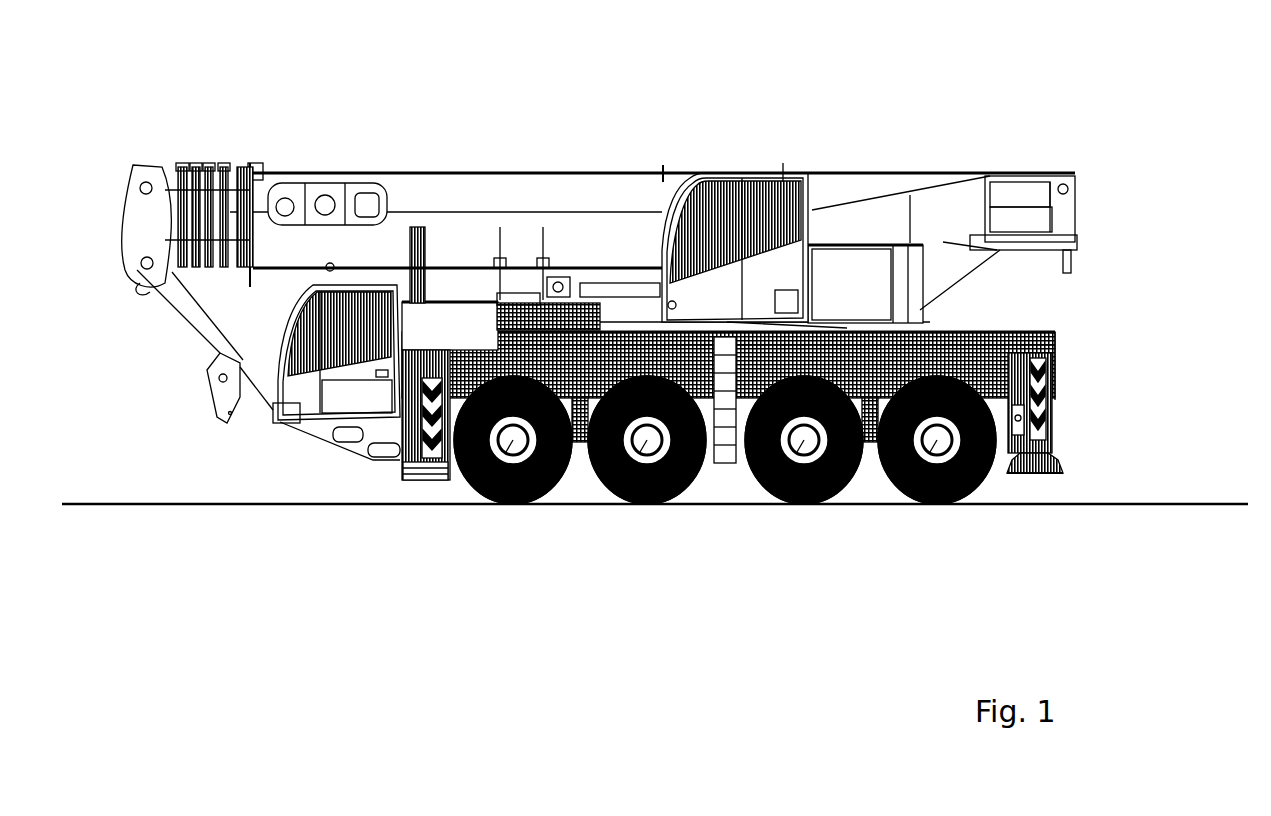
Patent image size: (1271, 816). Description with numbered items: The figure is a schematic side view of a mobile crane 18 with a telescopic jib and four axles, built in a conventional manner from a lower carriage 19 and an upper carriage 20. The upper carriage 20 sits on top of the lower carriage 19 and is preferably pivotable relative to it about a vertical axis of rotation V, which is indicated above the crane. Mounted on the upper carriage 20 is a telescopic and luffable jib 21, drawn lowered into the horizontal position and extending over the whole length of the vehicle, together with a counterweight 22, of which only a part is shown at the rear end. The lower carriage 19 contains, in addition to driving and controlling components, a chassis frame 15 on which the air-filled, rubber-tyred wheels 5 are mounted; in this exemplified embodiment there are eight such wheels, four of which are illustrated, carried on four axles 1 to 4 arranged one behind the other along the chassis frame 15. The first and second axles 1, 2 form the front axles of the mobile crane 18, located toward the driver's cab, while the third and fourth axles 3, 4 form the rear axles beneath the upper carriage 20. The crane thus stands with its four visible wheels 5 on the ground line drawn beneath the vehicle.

The first axle 1 is at (478, 497).
The second axle 2 is at (613, 505).
The third axle 3 is at (777, 503).
The fourth axle 4 is at (907, 505).
The wheels 5 is at (517, 507).
The chassis frame 15 is at (1040, 473).
The mobile crane 18 is at (577, 54).
The lower carriage 19 is at (1050, 393).
The upper carriage 20 is at (943, 242).
The telescopic and luffable jib 21 is at (452, 218).
The counterweight 22 is at (1027, 197).
The vertical axis of rotation V is at (788, 215).